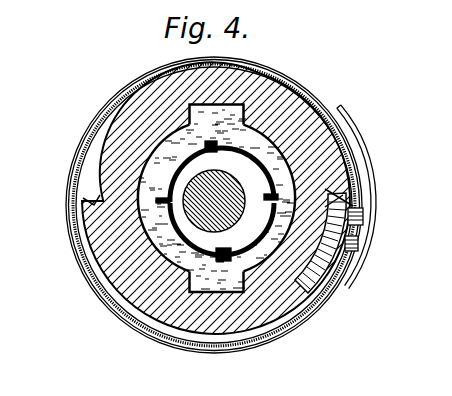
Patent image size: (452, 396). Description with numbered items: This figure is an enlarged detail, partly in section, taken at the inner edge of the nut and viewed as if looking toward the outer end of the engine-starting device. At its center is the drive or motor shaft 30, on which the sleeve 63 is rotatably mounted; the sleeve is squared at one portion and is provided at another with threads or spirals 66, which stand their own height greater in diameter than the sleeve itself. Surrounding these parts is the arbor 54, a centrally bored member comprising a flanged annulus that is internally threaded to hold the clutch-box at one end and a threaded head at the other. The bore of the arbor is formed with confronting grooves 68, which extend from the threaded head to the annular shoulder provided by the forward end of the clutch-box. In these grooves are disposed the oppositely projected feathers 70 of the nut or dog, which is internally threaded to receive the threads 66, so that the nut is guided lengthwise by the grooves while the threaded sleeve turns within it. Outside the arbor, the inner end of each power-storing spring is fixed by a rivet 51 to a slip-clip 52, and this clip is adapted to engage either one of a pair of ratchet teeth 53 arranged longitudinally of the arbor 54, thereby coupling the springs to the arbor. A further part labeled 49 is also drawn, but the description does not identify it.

The drive or motor shaft 30 is at (160, 165).
The outer casing ring 49 is at (61, 228).
The rivet 51 is at (355, 209).
The slip-clip 52 is at (327, 255).
The ratchet teeth 53 is at (83, 196).
The arbor 54 is at (113, 280).
The sleeve 63 is at (200, 160).
The threads or spirals 66 is at (275, 108).
The confronting grooves 68 is at (165, 83).
The feathers 70 is at (248, 62).